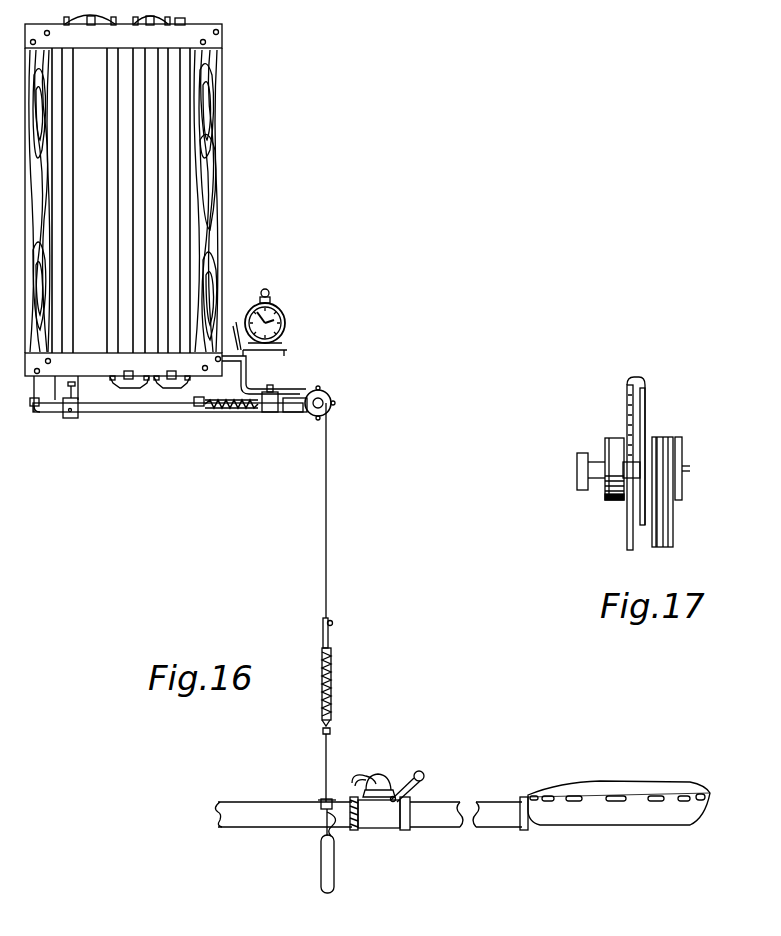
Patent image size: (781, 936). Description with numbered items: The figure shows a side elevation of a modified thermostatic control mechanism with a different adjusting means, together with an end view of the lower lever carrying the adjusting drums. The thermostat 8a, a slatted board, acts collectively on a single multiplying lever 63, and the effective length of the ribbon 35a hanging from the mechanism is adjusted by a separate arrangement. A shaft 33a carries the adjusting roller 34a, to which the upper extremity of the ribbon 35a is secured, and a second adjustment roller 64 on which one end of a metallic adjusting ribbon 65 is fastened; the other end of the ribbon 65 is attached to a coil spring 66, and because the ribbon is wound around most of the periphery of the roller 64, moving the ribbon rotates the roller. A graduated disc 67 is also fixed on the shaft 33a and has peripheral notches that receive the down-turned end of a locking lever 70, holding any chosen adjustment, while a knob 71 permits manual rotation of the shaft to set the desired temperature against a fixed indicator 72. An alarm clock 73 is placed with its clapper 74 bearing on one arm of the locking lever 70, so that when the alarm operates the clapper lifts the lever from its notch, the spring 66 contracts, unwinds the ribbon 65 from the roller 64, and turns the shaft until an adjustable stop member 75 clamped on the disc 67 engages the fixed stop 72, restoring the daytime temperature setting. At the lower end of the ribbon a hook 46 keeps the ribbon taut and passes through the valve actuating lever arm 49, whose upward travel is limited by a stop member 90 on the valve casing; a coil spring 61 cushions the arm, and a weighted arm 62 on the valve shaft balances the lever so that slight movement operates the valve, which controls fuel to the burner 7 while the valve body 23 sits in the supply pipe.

In FIG. 16, the thermostat 8a is at (218, 215).
In FIG. 16, the multiplying lever 63 is at (166, 411).
In FIG. 16, the coil spring 66 is at (228, 412).
In FIG. 16, the adjusting ribbon 65 is at (280, 412).
In FIG. 17, the adjusting ribbon 65 is at (620, 440).
In FIG. 16, the locking lever 70 is at (249, 380).
In FIG. 16, the clapper 74 is at (243, 320).
In FIG. 16, the alarm clock 73 is at (283, 318).
In FIG. 16, the graduated disc 67 is at (333, 400).
In FIG. 16, the ribbon 35a is at (328, 541).
In FIG. 17, the ribbon 35a is at (674, 535).
In FIG. 16, the hook 46 is at (324, 775).
In FIG. 16, the valve 23 is at (390, 831).
In FIG. 16, the stop member 90 is at (373, 780).
In FIG. 16, the valve actuating lever arm 49 is at (335, 801).
In FIG. 16, the weighted arm 62 is at (416, 777).
In FIG. 16, the coil spring 61 is at (333, 836).
In FIG. 16, the burner 7 is at (660, 784).
In FIG. 17, the knob 71 is at (580, 478).
In FIG. 17, the second adjustment roller 64 is at (605, 497).
In FIG. 17, the adjustable stop member 75 is at (628, 480).
In FIG. 17, the fixed indicator 72 is at (650, 393).
In FIG. 17, the adjusting roller 34a is at (672, 440).
In FIG. 17, the shaft 33a is at (690, 468).